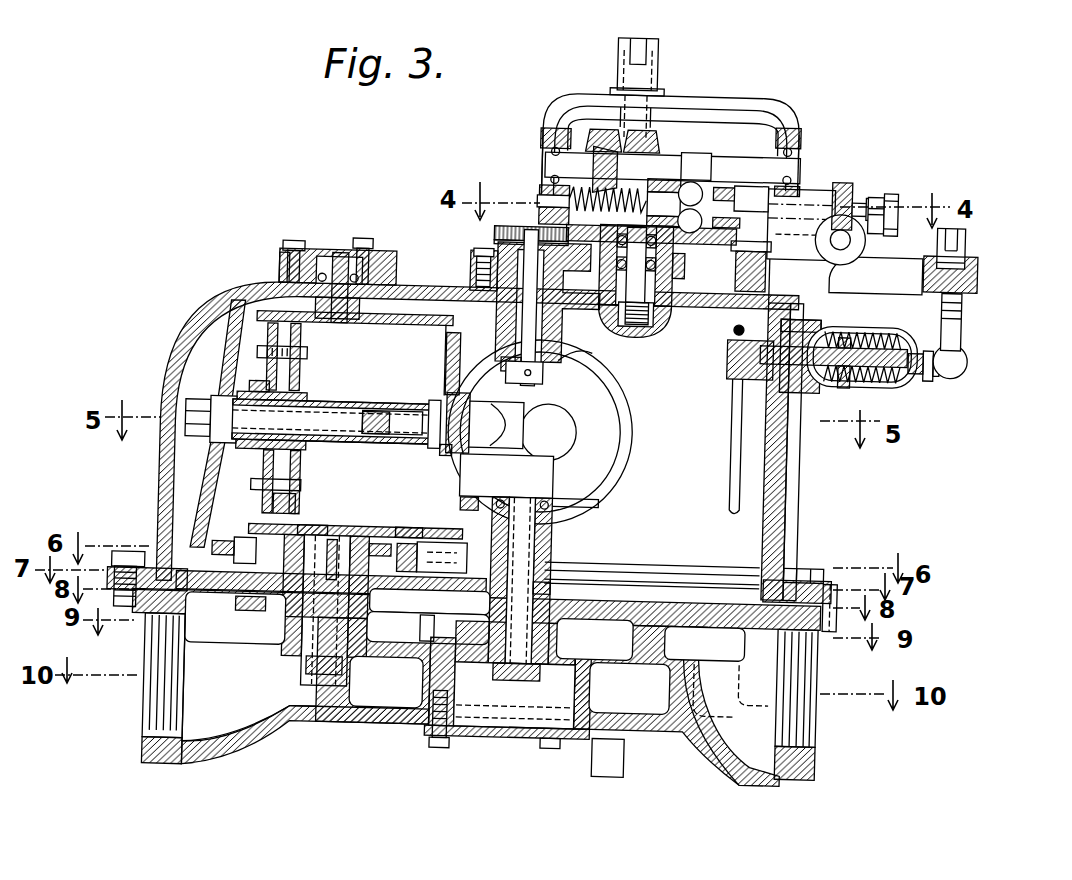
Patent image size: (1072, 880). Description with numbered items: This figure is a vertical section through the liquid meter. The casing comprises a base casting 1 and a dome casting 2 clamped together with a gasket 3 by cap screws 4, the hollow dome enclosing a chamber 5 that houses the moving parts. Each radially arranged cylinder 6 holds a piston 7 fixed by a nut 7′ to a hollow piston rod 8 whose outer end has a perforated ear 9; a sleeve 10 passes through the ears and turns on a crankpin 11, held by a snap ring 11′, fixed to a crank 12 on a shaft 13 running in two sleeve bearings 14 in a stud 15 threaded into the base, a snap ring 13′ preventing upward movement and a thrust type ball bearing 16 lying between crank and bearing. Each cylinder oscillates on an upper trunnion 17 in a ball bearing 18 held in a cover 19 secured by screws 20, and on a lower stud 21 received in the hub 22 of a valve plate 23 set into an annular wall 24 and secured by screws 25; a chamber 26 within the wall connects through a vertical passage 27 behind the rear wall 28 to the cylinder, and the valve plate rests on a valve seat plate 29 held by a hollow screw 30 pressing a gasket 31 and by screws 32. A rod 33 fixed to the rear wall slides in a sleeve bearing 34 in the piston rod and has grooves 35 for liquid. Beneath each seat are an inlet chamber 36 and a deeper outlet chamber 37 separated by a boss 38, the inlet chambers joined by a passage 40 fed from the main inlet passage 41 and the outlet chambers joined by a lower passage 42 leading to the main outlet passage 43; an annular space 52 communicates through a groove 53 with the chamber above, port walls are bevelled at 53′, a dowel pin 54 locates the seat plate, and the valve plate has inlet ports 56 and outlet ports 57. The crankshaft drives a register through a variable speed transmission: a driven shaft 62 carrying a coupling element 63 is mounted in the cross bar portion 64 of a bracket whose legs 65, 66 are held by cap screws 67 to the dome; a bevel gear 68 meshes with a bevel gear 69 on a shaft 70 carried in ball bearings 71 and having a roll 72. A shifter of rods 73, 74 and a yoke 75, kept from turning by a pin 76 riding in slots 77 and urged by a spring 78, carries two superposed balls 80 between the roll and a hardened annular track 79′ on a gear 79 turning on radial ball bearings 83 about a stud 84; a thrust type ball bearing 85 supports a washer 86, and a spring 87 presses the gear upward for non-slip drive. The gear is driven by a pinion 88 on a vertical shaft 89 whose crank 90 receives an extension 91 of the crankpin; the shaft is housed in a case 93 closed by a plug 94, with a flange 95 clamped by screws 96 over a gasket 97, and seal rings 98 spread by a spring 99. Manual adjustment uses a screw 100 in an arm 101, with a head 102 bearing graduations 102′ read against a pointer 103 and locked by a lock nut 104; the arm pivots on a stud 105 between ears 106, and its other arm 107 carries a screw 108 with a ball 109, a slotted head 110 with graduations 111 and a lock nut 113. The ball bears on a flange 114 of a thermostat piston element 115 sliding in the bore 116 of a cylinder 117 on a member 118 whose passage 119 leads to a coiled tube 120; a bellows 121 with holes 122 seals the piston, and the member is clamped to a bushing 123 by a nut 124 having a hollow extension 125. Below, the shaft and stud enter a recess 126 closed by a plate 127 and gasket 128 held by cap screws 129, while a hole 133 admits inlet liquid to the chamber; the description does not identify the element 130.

The base casting 1 is at (817, 622).
The dome casting 2 is at (800, 520).
The gasket 3 is at (800, 617).
The cap screws 4 is at (798, 572).
The chamber 5 is at (778, 480).
The cylinder 6 is at (408, 329).
The piston 7 is at (300, 357).
The nut 7′ is at (255, 390).
The hollow piston rod 8 is at (385, 406).
The perforated ear 9 is at (523, 431).
The sleeve 10 is at (442, 453).
The crankpin 11 is at (450, 400).
The snap ring 11′ is at (448, 363).
The crank 12 is at (506, 483).
The shaft 13 is at (548, 548).
The snap ring 13′ is at (535, 672).
The sleeve bearings 14 is at (552, 536).
The stud 15 is at (560, 578).
The thrust type ball bearing 16 is at (560, 503).
The trunnion 17 is at (336, 258).
The ball bearing 18 is at (333, 262).
The cover 19 is at (281, 253).
The screws 20 is at (290, 246).
The stud 21 is at (340, 547).
The central hub 22 is at (380, 546).
The valve plate 23 is at (550, 566).
The annular wall 24 is at (175, 534).
The screws 25 is at (420, 530).
The cylindrical chamber 26 is at (302, 530).
The vertical passage 27 is at (216, 470).
The rear wall 28 is at (195, 405).
The valve seat plate 29 is at (212, 615).
The hollow screw 30 is at (428, 628).
The gasket 31 is at (429, 603).
The screws 32 is at (255, 612).
The cylindrical rod 33 is at (325, 428).
The sleeve bearing 34 is at (304, 401).
The longitudinal grooves 35 is at (373, 428).
The inlet chamber 36 is at (421, 628).
The outlet chamber 37 is at (300, 690).
The central boss 38 is at (386, 682).
The passage 40 is at (621, 645).
The main inlet passage 41 is at (775, 695).
The passage 42 is at (385, 725).
The main outlet passage 43 is at (250, 679).
The annular space 52 is at (247, 596).
The groove 53 is at (325, 610).
The bevel 53′ is at (236, 566).
The dowel pin 54 is at (550, 583).
The inlet ports 56 is at (405, 530).
The outlet ports 57 is at (262, 520).
The driven shaft 62 is at (655, 100).
The coupling element 63 is at (657, 52).
The cross bar portion 64 is at (770, 110).
The leg 65 is at (540, 130).
The leg 66 is at (800, 138).
The cap screws 67 is at (773, 273).
The bevel gear 68 is at (657, 137).
The bevel gear 69 is at (603, 140).
The shaft 70 is at (627, 165).
The ball bearings 71 is at (544, 149).
The hardened cylindrical portion 72 is at (700, 155).
The rod 73 is at (550, 200).
The rod 74 is at (749, 205).
The yoke 75 is at (657, 183).
The pin 76 is at (808, 205).
The slots 77 is at (807, 230).
The spring 78 is at (588, 160).
The gear 79 is at (736, 233).
The hardened annular track 79′ is at (540, 217).
The balls 80 is at (694, 187).
The radial ball bearings 83 is at (683, 254).
The vertical stud 84 is at (657, 310).
The thrust type ball bearing 85 is at (667, 307).
The washer 86 is at (628, 330).
The spring 87 is at (681, 268).
The pinion 88 is at (493, 233).
The vertical shaft 89 is at (512, 331).
The crank 90 is at (544, 376).
The extension 91 is at (500, 365).
The hollow cylindrical case 93 is at (574, 345).
The plug 94 is at (485, 232).
The top flange 95 is at (478, 252).
The screws 96 is at (474, 275).
The gasket 97 is at (470, 260).
The seal rings 98 is at (507, 311).
The spring 99 is at (620, 303).
The screw 100 is at (866, 218).
The arm 101 is at (838, 185).
The head 102 is at (893, 196).
The graduations 102′ is at (890, 188).
The pointer 103 is at (882, 185).
The lock nut 104 is at (870, 192).
The stud 105 is at (890, 217).
The ears 106 is at (845, 248).
The arm 107 is at (876, 276).
The screw 108 is at (975, 272).
The ball 109 is at (968, 361).
The slotted cylindrical head 110 is at (962, 228).
The graduations 111 is at (962, 244).
The lock nut 113 is at (962, 298).
The flange 114 is at (945, 372).
The piston element 115 is at (928, 375).
The bore 116 is at (846, 372).
The cylinder 117 is at (866, 336).
The member 118 is at (728, 365).
The passage 119 is at (738, 338).
The tube 120 is at (736, 437).
The bellows 121 is at (905, 340).
The holes 122 is at (846, 333).
The bushing 123 is at (797, 325).
The nut 124 is at (812, 322).
The hollow extension 125 is at (906, 372).
The recess 126 is at (510, 674).
The plate 127 is at (468, 740).
The gasket 128 is at (440, 750).
The cap screws 129 is at (555, 750).
The pipe 130 is at (625, 770).
The hole 133 is at (707, 612).